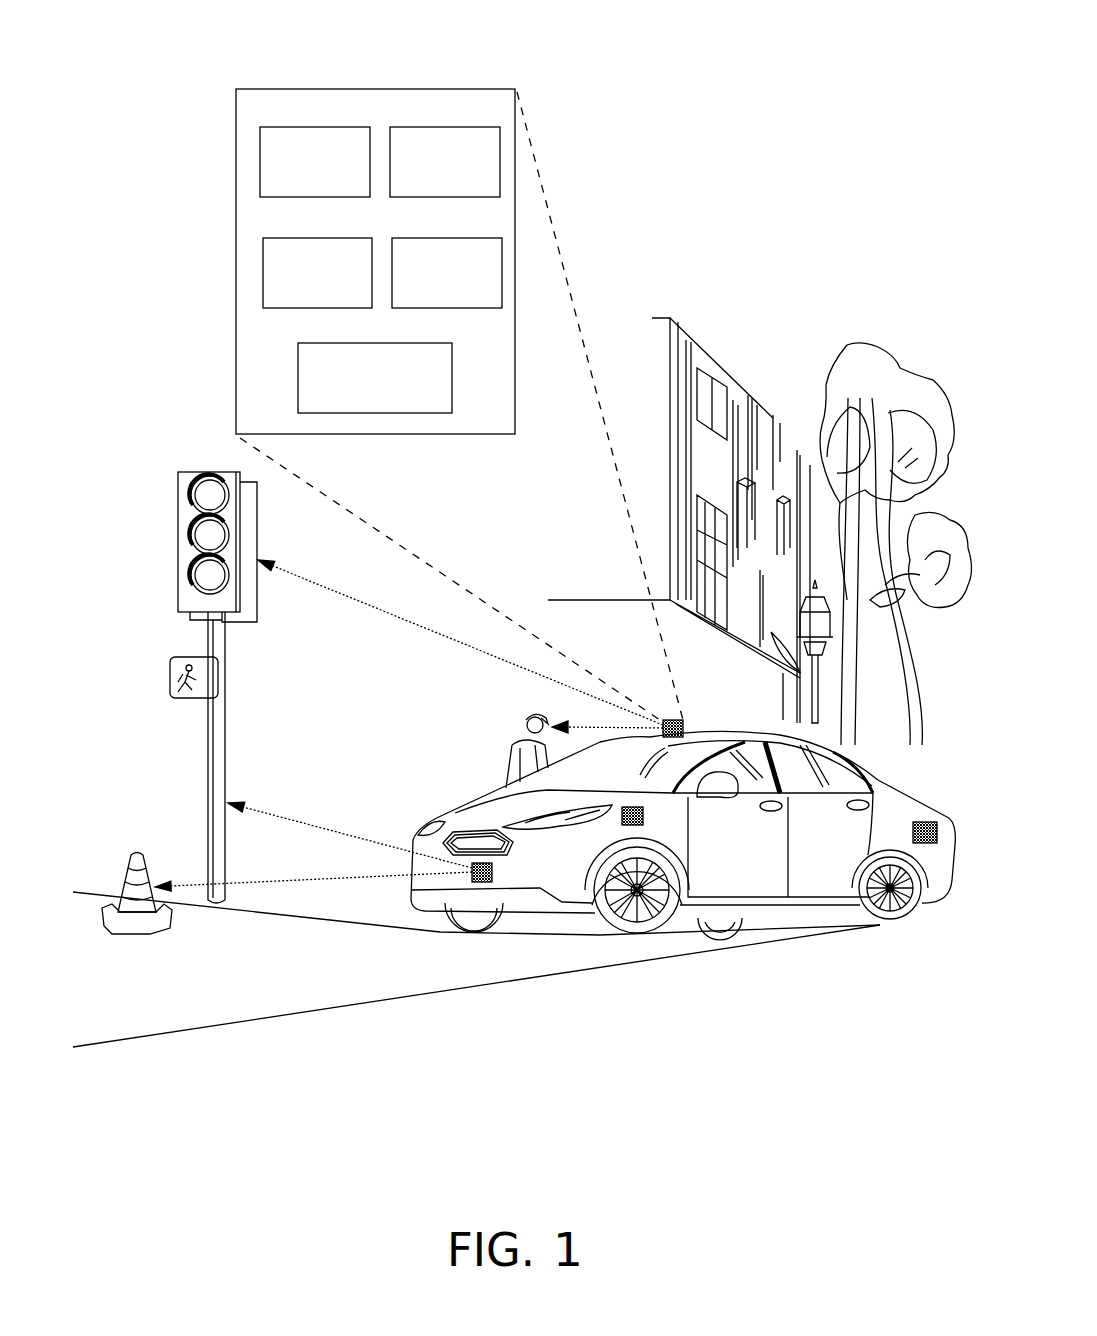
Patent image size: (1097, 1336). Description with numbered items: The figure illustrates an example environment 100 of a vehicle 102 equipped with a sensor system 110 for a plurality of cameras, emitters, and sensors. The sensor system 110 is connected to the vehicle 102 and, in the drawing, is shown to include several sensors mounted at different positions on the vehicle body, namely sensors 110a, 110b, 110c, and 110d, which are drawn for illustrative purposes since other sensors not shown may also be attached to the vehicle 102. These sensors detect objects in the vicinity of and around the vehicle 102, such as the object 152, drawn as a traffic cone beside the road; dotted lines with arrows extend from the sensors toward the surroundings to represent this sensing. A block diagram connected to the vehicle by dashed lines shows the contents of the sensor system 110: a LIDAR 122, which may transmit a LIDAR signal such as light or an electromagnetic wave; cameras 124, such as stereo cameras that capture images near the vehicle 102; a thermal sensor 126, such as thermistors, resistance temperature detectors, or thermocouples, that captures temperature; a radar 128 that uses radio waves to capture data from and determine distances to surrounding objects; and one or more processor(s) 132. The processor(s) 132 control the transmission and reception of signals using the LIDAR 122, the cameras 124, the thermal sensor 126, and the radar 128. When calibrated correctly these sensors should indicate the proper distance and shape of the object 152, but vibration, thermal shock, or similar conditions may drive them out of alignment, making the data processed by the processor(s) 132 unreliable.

The environment 100 is at (868, 21).
The sensor system 110 is at (470, 90).
The LIDAR 122 is at (452, 127).
The cameras 124 is at (300, 127).
The thermal sensor 126 is at (312, 238).
The radar 128 is at (453, 238).
The processor(s) 132 is at (390, 343).
The sensor 110a is at (685, 728).
The sensor 110b is at (630, 807).
The sensor 110c is at (494, 876).
The sensor 110d is at (933, 822).
The vehicle 102 is at (445, 822).
The object 152 is at (133, 935).